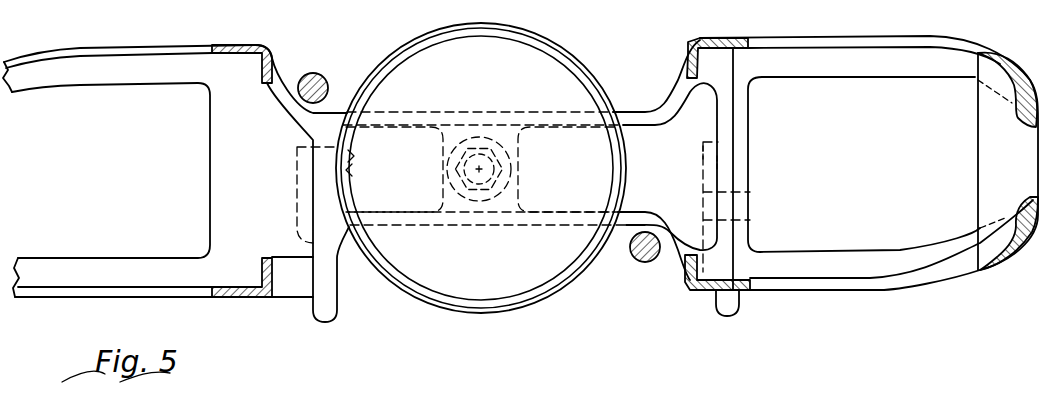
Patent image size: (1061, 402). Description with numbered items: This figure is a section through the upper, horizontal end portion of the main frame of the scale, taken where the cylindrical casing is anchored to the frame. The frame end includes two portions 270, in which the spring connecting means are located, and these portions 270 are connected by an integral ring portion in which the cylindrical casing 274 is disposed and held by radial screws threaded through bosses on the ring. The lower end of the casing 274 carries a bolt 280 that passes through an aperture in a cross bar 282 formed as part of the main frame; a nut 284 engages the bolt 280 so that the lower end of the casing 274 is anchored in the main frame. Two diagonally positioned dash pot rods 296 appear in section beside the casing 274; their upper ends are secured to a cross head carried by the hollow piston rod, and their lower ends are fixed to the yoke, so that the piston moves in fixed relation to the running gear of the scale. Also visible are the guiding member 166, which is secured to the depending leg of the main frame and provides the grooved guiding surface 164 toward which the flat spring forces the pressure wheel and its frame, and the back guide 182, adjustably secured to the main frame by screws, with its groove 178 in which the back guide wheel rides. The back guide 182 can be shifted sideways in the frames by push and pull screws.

The portions of the main frame 270 is at (167, 63).
The cylindrical casing 274 is at (565, 67).
The cross bar 282 is at (652, 110).
The dash pot rods 296 is at (320, 82).
The guiding member 166 is at (354, 156).
The grooved guiding surface 164 is at (349, 169).
The nut 284 is at (493, 157).
The bolt 280 is at (487, 170).
The back guide 182 is at (703, 153).
The groove 178 is at (717, 163).